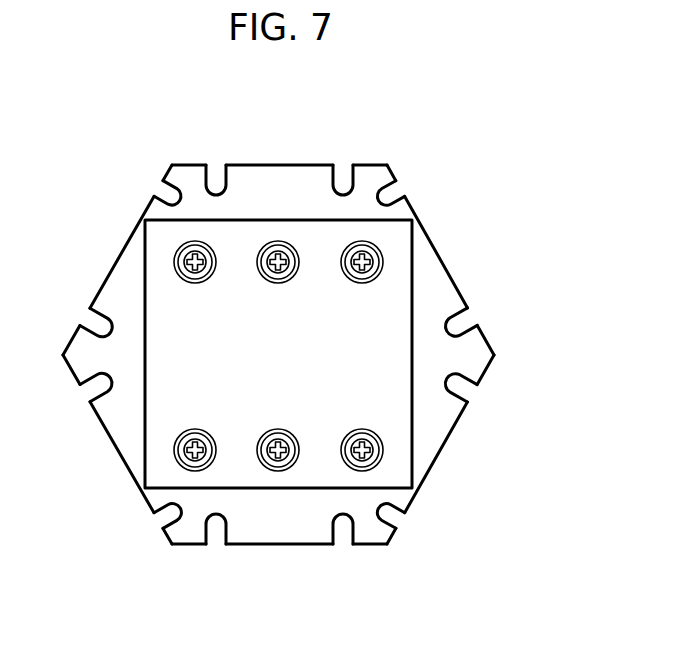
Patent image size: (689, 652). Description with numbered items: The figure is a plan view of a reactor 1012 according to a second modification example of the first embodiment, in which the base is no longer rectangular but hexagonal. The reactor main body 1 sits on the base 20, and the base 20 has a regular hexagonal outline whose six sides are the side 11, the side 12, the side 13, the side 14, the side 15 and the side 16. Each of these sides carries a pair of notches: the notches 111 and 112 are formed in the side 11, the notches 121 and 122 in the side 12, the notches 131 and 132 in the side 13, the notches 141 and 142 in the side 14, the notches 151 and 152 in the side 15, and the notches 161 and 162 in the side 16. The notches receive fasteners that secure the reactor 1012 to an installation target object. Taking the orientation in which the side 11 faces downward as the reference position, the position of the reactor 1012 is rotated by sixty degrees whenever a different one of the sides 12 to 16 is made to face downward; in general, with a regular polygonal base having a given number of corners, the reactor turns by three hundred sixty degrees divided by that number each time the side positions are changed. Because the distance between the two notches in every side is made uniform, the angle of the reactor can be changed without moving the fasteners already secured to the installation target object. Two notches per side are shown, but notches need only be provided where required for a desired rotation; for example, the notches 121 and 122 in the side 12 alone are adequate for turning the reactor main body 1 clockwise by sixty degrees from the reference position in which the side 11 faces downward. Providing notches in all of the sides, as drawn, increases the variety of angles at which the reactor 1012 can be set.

The reactor 1012 is at (500, 136).
The reactor main body 1 is at (291, 374).
The base 20 is at (297, 210).
The side 11 is at (278, 546).
The notch 111 is at (215, 526).
The notch 112 is at (343, 526).
The side 12 is at (430, 468).
The notch 121 is at (402, 520).
The notch 122 is at (466, 402).
The side 13 is at (437, 252).
The notch 131 is at (472, 310).
The notch 132 is at (396, 196).
The side 14 is at (290, 164).
The notch 141 is at (343, 189).
The notch 142 is at (215, 191).
The side 15 is at (121, 258).
The notch 151 is at (163, 198).
The notch 152 is at (92, 318).
The side 16 is at (122, 460).
The notch 161 is at (95, 404).
The notch 162 is at (162, 523).